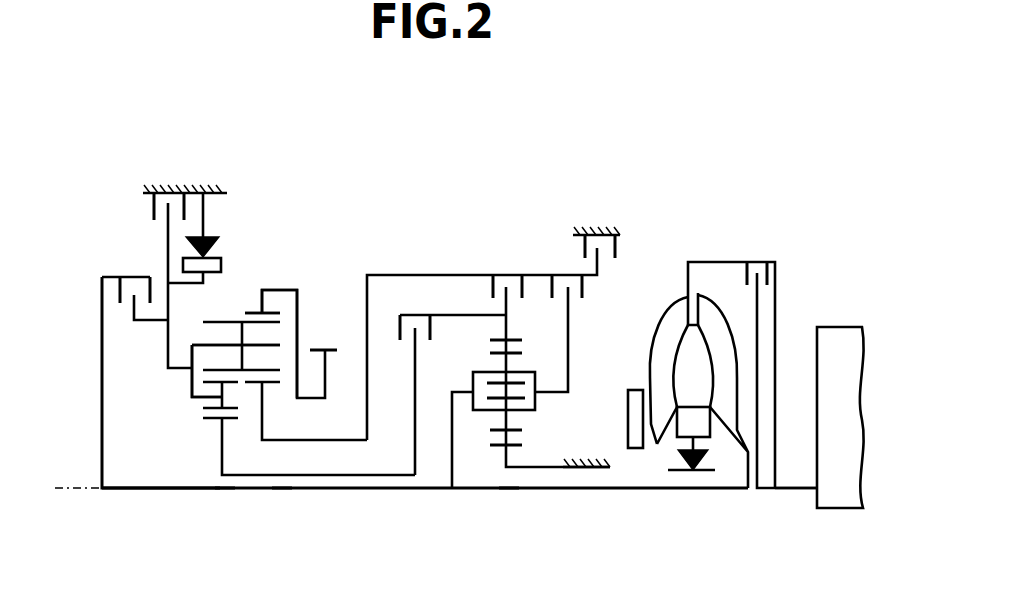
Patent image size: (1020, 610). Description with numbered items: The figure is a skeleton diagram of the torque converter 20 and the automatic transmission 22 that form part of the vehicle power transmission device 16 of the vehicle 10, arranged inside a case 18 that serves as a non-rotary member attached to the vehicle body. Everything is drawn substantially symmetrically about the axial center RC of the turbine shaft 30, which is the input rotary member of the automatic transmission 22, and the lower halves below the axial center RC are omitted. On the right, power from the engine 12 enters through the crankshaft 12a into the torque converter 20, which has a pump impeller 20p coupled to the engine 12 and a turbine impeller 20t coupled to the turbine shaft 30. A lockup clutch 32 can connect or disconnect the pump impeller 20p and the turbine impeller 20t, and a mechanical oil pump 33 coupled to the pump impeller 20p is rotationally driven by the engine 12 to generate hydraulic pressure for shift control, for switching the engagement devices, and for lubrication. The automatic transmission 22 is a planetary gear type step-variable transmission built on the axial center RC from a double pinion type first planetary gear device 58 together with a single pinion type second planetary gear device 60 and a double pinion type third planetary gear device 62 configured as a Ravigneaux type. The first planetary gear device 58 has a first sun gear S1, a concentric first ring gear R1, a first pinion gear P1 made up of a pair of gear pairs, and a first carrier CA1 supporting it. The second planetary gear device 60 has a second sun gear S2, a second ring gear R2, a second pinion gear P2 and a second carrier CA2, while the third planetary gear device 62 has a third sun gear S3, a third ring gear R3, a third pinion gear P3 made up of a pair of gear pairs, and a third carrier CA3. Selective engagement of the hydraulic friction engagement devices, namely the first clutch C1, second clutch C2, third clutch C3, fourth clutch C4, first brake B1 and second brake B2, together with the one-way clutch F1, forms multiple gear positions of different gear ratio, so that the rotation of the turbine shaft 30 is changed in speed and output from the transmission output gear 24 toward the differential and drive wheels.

The vehicle 10 is at (695, 125).
The engine 12 is at (845, 332).
The crankshaft 12a is at (790, 490).
The vehicle power transmission device 16 is at (513, 206).
The case 18 is at (190, 185).
The torque converter 20 is at (701, 344).
The pump impeller 20p is at (668, 338).
The turbine impeller 20t is at (720, 338).
The automatic transmission 22 is at (168, 530).
The transmission output gear 24 is at (331, 348).
The turbine shaft 30 is at (688, 490).
The lockup clutch 32 is at (768, 278).
The mechanical oil pump 33 is at (632, 395).
The first planetary gear device 58 is at (509, 496).
The second planetary gear device 60 is at (282, 496).
The third planetary gear device 62 is at (225, 496).
The axial center RC is at (65, 488).
The first brake B1 is at (615, 249).
The second brake B2 is at (156, 280).
The first clutch C1 is at (453, 381).
The second clutch C2 is at (135, 286).
The third clutch C3 is at (550, 357).
The fourth clutch C4 is at (558, 320).
The one-way clutch F1 is at (210, 238).
The first carrier CA1 is at (537, 398).
The second carrier CA2 is at (190, 378).
The third carrier CA3 is at (222, 412).
The first ring gear R1 is at (503, 340).
The second ring gear R2 is at (248, 310).
The third ring gear R3 is at (289, 326).
The first sun gear S1 is at (497, 446).
The second sun gear S2 is at (266, 388).
The third sun gear S3 is at (215, 420).
The first pinion gear P1 is at (510, 352).
The second pinion gear P2 is at (234, 322).
The third pinion gear P3 is at (205, 405).